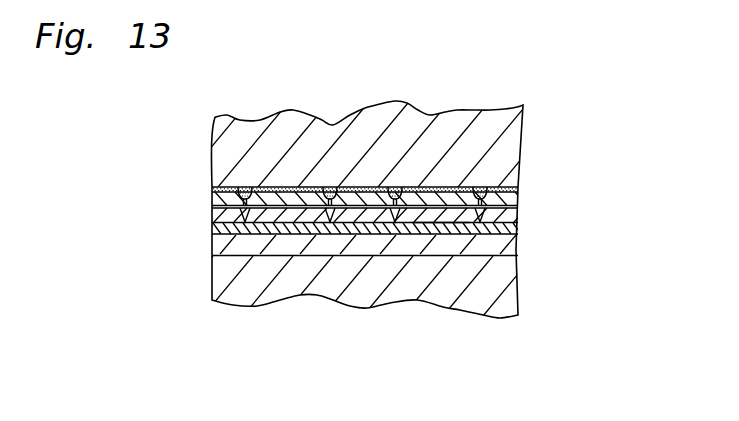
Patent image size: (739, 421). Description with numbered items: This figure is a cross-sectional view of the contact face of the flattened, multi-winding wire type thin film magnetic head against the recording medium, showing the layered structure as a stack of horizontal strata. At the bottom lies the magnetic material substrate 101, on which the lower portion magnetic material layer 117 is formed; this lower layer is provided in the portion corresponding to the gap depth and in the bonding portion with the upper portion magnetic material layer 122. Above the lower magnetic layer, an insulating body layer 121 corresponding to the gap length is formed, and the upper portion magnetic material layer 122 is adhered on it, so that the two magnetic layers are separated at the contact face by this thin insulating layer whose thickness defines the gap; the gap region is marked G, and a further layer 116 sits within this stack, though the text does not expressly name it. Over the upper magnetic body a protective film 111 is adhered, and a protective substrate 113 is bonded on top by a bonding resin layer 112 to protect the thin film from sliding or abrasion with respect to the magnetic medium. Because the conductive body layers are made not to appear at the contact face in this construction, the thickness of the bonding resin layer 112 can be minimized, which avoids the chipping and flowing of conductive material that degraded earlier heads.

The protective substrate 113 is at (503, 143).
The bonding resin layer 112 is at (517, 188).
The protective film 111 is at (517, 195).
The lower portion magnetic material layer 117 is at (492, 214).
The gap G is at (518, 222).
The lower electrode layer 116 is at (497, 245).
The magnetic material substrate 101 is at (498, 297).
The insulating body layer 121 is at (392, 222).
The upper portion magnetic material layer 122 is at (445, 222).